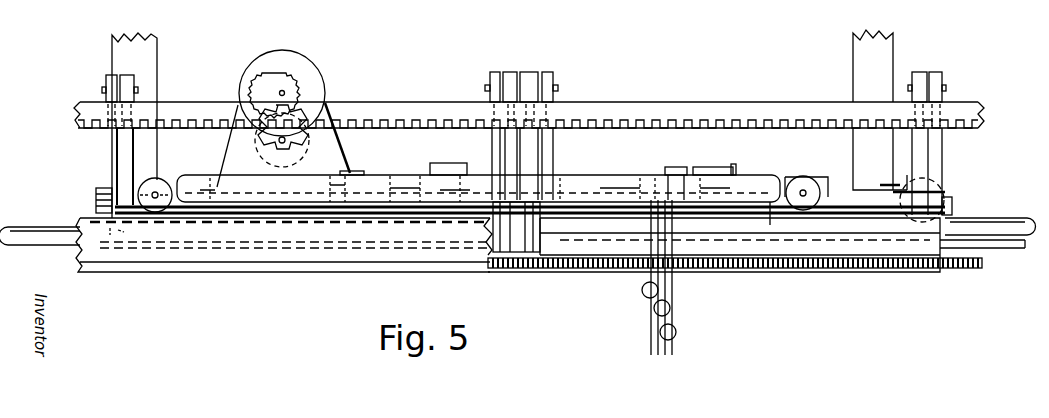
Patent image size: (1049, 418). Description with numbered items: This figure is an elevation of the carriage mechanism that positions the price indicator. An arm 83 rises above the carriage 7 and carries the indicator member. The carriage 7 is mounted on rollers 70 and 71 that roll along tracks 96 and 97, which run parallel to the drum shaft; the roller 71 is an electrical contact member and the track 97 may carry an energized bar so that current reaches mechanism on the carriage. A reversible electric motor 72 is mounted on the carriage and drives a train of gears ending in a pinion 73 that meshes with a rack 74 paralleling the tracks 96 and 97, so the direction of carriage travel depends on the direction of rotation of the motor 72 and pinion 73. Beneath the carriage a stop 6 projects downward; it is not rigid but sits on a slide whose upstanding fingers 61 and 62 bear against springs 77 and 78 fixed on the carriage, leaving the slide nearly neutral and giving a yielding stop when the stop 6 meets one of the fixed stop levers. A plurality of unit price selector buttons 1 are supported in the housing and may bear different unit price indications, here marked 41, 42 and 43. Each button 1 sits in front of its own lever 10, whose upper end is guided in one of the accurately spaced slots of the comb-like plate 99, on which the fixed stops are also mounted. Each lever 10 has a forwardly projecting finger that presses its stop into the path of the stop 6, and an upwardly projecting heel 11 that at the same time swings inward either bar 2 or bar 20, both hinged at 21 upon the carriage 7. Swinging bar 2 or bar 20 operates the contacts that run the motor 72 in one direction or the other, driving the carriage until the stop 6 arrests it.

The button 1 is at (636, 277).
The bar 2 is at (768, 225).
The stop 6 is at (527, 268).
The carriage 7 is at (573, 175).
The lever 10 is at (655, 352).
The heel 11 is at (668, 220).
The bar 20 is at (257, 250).
The hinge 21 is at (101, 93).
The rod 41 is at (650, 290).
The rod 42 is at (662, 308).
The rod 43 is at (660, 328).
The finger 61 is at (680, 167).
The finger 62 is at (380, 173).
The roller 70 is at (103, 187).
The roller 71 is at (158, 188).
The electric motor 72 is at (297, 60).
The pinion 73 is at (286, 140).
The rack 74 is at (431, 118).
The spring 77 is at (713, 167).
The spring 78 is at (355, 173).
The arm 83 is at (858, 70).
The track 96 is at (992, 220).
The track 97 is at (83, 217).
The plate 99 is at (812, 268).